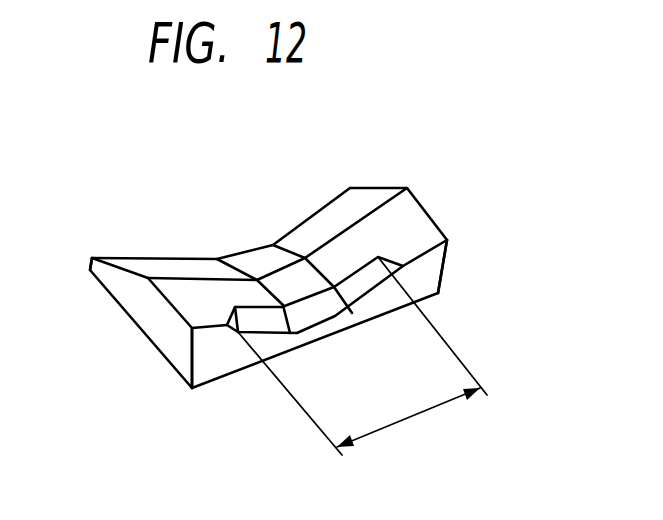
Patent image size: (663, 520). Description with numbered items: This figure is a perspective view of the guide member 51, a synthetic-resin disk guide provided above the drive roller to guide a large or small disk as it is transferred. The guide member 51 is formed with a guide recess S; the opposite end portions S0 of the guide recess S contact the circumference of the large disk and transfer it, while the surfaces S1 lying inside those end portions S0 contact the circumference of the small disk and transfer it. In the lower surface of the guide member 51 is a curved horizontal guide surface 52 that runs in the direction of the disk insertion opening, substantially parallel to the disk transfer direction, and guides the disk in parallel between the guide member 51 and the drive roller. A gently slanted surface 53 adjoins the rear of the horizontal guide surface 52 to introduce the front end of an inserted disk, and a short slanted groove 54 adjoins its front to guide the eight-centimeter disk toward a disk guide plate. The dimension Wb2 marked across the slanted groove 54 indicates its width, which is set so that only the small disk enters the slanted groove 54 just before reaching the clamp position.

The guide member 51 is at (428, 189).
The horizontal guide surface 52 is at (338, 248).
The gently slanted surface 53 is at (291, 242).
The slanted groove 54 is at (353, 300).
The guide recess S is at (375, 238).
The end portion of guide recess S0 is at (486, 213).
The inner surface of guide recess S1 is at (358, 235).
The width of groove Wb2 is at (362, 356).